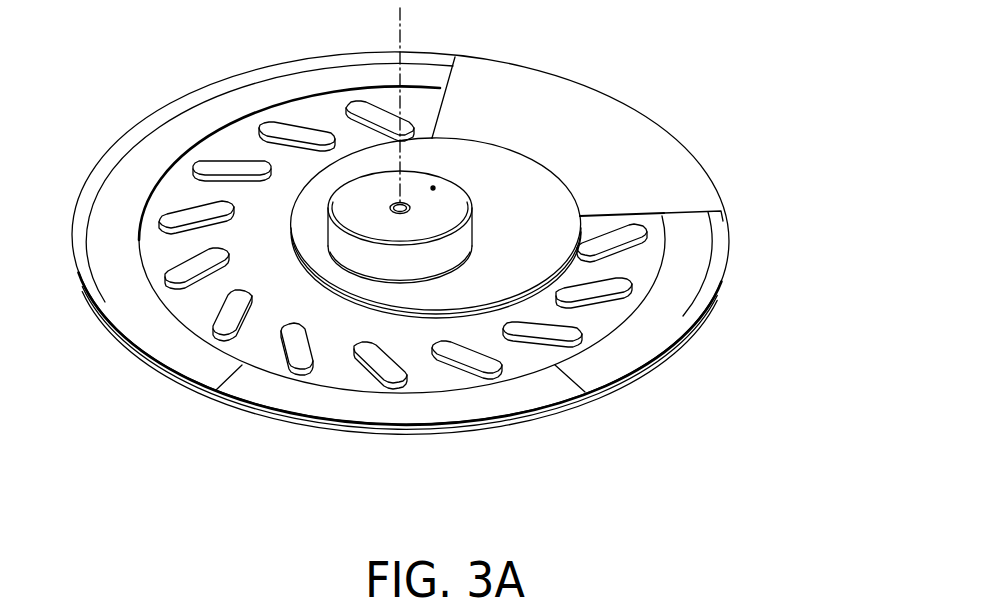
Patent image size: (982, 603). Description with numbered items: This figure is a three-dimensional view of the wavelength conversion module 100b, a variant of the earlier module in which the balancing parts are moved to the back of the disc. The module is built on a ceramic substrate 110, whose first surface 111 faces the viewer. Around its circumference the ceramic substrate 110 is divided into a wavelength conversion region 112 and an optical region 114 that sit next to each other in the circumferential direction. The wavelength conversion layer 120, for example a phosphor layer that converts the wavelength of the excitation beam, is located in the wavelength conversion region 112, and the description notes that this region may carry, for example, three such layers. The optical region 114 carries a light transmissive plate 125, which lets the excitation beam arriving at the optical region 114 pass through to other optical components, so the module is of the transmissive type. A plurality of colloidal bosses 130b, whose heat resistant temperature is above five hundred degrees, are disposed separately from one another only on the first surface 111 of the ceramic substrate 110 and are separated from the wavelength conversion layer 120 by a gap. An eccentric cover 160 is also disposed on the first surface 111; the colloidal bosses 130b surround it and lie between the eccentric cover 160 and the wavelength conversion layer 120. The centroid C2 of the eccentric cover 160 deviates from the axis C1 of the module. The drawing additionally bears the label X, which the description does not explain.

The wavelength conversion module 100b is at (790, 514).
The ceramic substrate 110 is at (567, 402).
The first surface 111 is at (453, 373).
The wavelength conversion region 112 is at (687, 265).
The optical region 114 is at (612, 132).
The wavelength conversion layer 120 is at (247, 385).
The light transmissive plate 125 is at (667, 178).
The colloidal bosses 130b is at (362, 107).
The eccentric cover 160 is at (478, 182).
The axis C1 is at (408, 213).
The centroid C2 is at (437, 190).
The rotation axis X is at (400, 102).